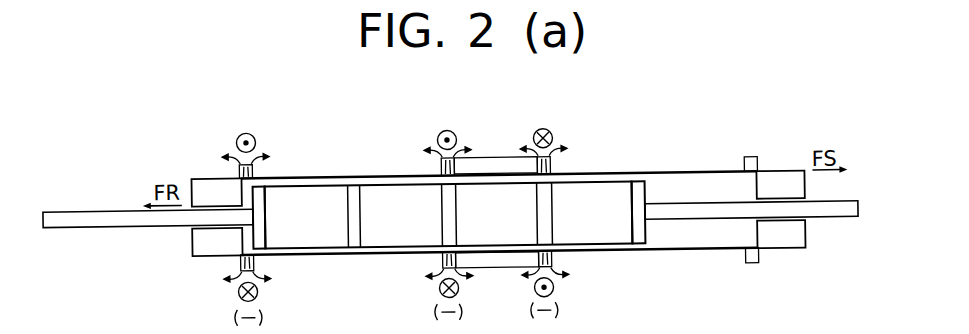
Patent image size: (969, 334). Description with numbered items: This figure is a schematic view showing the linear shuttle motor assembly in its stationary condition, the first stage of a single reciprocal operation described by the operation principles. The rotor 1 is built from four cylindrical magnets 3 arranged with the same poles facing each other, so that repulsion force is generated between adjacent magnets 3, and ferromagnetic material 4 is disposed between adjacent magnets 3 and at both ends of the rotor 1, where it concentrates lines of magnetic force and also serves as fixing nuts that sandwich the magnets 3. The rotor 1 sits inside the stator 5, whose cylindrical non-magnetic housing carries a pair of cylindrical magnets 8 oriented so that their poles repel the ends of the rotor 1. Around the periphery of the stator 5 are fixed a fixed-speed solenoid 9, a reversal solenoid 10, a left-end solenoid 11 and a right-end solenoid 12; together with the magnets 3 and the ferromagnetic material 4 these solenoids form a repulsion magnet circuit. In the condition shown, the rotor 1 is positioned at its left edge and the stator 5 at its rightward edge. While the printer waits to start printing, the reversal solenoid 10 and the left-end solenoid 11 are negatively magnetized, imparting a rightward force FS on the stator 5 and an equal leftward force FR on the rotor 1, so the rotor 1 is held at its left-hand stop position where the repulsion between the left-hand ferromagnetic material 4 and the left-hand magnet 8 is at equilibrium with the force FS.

The rotor 1 is at (637, 236).
The cylindrical magnets 3 is at (300, 231).
The ferromagnetic material 4 is at (262, 238).
The stator 5 is at (662, 253).
The cylindrical magnets 8 is at (215, 184).
The fixed-speed solenoid 9 is at (492, 158).
The reversal solenoid 10 is at (442, 168).
The left-end solenoid 11 is at (255, 172).
The right-end solenoid 12 is at (752, 161).